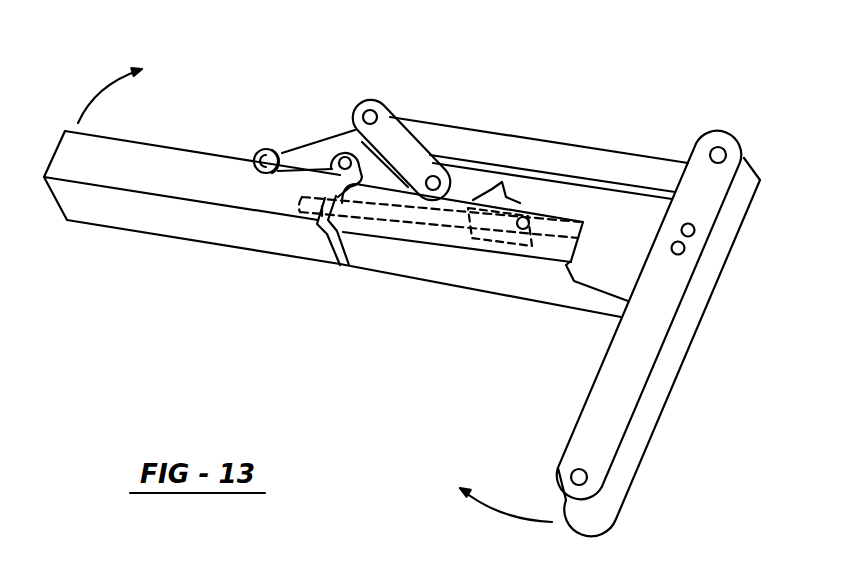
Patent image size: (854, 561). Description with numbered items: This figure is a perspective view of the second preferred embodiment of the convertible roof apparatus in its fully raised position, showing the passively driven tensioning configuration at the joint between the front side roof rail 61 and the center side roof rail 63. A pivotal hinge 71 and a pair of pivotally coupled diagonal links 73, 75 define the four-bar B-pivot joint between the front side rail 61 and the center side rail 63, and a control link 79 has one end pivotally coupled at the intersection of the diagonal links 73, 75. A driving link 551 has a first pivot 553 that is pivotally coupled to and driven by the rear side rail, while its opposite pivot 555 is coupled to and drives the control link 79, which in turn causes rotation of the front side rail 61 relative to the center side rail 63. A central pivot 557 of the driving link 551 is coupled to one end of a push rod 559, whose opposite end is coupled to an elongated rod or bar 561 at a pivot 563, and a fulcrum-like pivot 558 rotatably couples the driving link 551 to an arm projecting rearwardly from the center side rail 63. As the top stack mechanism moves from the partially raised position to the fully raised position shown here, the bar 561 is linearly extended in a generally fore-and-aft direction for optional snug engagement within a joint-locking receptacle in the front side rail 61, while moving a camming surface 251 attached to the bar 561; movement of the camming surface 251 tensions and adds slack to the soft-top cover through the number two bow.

The front side roof rail 61 is at (105, 205).
The center side roof rail 63 is at (530, 282).
The camming surface 251 is at (495, 186).
The elongated rod or bar 561 is at (314, 207).
The pivot 563 is at (523, 217).
The pivotal hinge 71 is at (343, 150).
The diagonal link 73 is at (312, 143).
The diagonal link 75 is at (410, 150).
The control link 79 is at (561, 158).
The push rod 559 is at (615, 236).
The driving link 551 is at (607, 407).
The first pivot 553 is at (583, 472).
The opposite pivot 555 is at (718, 147).
The central pivot 557 is at (689, 224).
The fulcrum-like pivot 558 is at (703, 329).